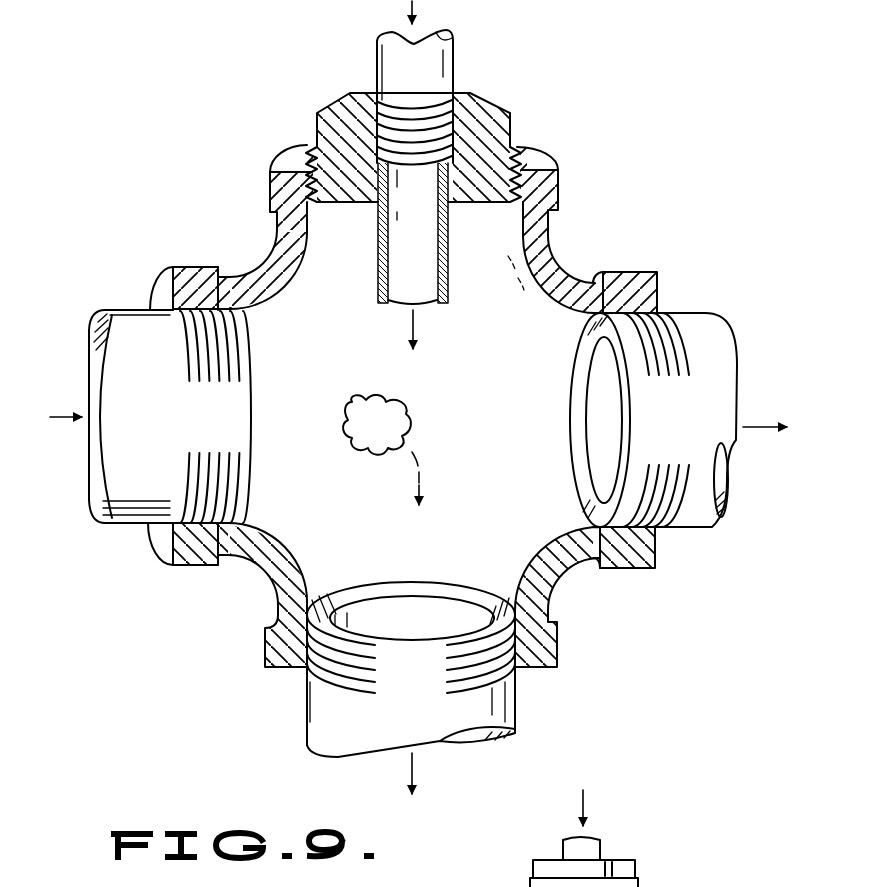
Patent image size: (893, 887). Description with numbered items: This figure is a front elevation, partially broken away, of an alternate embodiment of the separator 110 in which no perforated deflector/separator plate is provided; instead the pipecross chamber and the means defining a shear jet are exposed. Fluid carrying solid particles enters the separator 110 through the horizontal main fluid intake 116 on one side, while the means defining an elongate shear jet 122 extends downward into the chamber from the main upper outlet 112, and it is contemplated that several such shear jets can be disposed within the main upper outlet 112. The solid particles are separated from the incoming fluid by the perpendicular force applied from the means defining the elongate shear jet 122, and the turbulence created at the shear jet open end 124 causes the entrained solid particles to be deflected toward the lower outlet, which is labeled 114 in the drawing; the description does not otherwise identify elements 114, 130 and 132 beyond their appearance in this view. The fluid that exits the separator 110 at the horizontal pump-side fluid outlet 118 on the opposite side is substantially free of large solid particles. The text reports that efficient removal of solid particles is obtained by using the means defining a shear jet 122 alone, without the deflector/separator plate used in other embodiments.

The separator 110 is at (656, 177).
The main upper outlet 112 is at (488, 223).
The bottom outlet pipe 114 is at (363, 615).
The horizontal main fluid intake 116 is at (197, 428).
The horizontal pump-side fluid outlet 118 is at (640, 380).
The means defining an elongate shear jet 122 is at (447, 265).
The shear jet open end 124 is at (393, 307).
The upper chamber 130 is at (497, 323).
The mixing chamber 132 is at (305, 498).